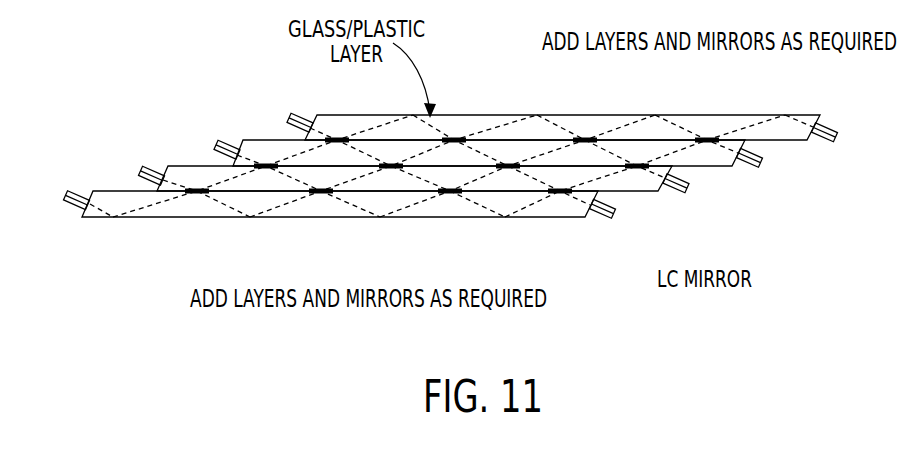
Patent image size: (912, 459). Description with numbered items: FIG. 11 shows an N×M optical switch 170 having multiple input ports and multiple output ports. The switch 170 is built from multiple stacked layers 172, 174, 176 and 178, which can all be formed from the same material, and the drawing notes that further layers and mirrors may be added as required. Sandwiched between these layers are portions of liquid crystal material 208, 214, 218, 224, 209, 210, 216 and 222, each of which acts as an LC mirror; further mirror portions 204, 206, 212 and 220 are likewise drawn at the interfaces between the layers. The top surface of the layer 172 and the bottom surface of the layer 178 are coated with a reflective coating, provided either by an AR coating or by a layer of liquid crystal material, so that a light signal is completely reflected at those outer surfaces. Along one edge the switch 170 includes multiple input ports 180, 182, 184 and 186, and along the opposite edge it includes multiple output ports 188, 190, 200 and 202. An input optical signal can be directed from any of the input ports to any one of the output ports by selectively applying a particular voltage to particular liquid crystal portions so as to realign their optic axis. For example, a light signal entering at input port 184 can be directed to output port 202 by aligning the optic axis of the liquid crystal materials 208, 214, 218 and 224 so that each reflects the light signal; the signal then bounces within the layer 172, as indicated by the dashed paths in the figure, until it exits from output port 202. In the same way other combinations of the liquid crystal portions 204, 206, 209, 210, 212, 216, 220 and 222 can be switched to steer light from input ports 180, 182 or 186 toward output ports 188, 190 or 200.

The switch 170 is at (206, 57).
The layer 172 is at (340, 115).
The layer 174 is at (250, 140).
The layer 176 is at (197, 166).
The layer 178 is at (123, 191).
The input port 180 is at (75, 193).
The input port 182 is at (147, 170).
The input port 184 is at (220, 147).
The input port 186 is at (293, 118).
The output port 188 is at (603, 218).
The output port 190 is at (678, 193).
The output port 200 is at (747, 170).
The output port 202 is at (817, 143).
The LC mirror 204 is at (197, 194).
The LC mirror 206 is at (321, 194).
The liquid crystal material 208 is at (342, 138).
The liquid crystal material 209 is at (266, 169).
The liquid crystal material 210 is at (391, 169).
The LC mirror 212 is at (450, 194).
The liquid crystal material 214 is at (456, 138).
The liquid crystal material 216 is at (508, 169).
The liquid crystal material 218 is at (587, 138).
The LC mirror 220 is at (560, 194).
The liquid crystal material 222 is at (640, 169).
The liquid crystal material 224 is at (708, 143).